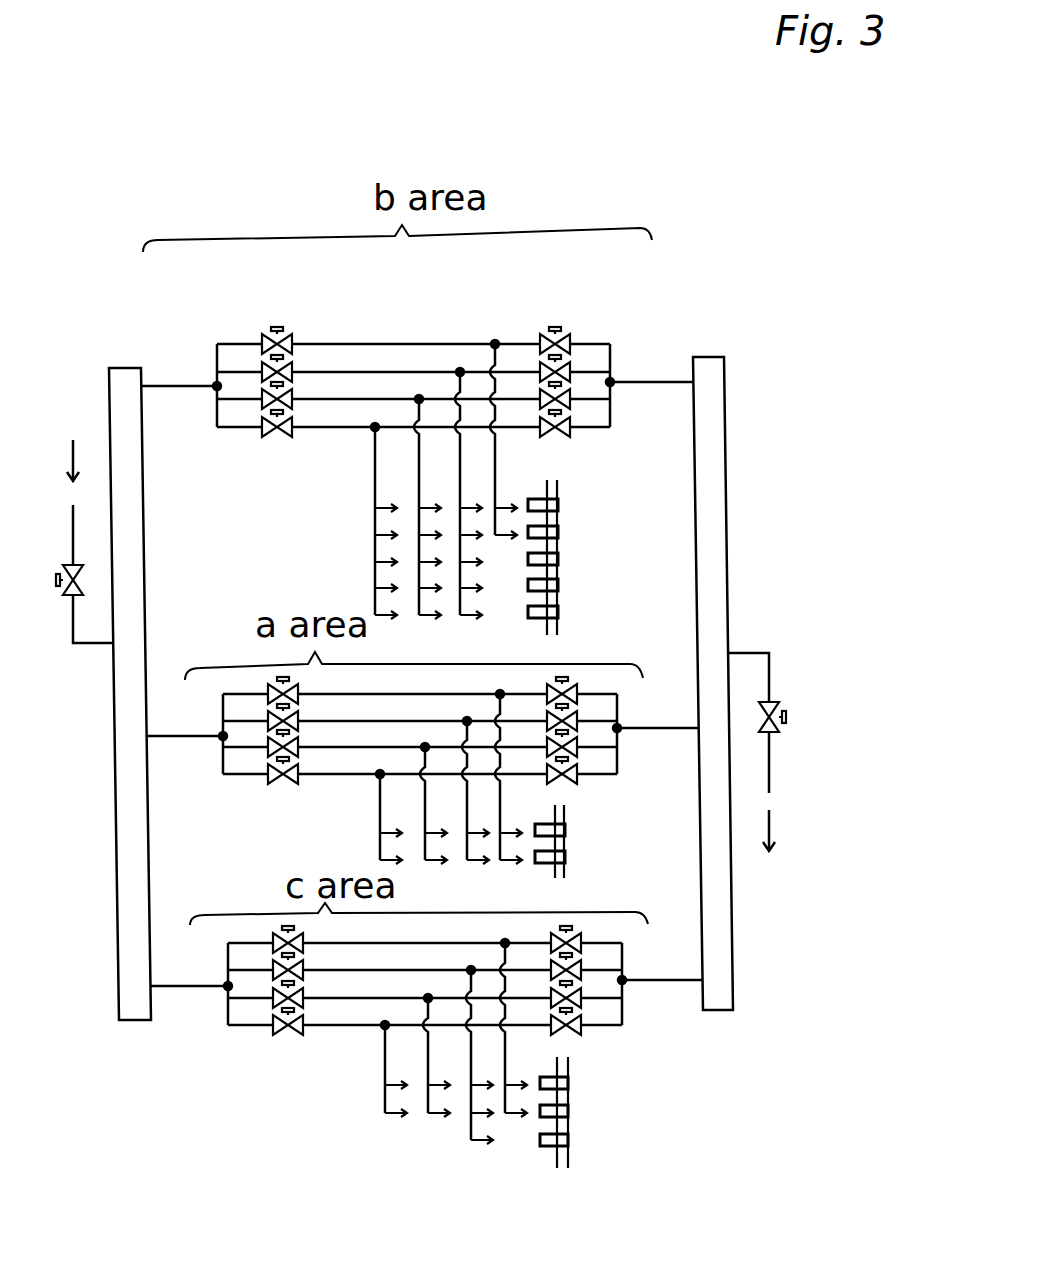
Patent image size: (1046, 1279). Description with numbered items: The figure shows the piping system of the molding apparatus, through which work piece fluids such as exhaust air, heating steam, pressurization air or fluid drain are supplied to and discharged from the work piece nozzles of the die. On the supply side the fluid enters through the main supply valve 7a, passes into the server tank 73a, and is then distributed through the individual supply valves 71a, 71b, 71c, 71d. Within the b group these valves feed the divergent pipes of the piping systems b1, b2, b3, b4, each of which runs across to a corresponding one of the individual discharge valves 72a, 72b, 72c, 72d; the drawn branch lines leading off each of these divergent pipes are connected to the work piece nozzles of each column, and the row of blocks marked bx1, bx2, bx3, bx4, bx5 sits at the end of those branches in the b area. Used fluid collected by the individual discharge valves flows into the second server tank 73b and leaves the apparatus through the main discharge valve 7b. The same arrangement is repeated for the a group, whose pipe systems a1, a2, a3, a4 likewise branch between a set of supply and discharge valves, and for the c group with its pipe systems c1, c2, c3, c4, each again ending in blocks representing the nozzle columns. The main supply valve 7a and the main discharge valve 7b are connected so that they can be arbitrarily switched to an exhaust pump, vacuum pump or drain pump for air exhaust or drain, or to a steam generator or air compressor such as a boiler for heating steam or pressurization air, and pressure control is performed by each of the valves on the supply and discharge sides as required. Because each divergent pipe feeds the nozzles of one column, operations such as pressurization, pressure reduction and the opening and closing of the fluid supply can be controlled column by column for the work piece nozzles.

The main supply valve 7a is at (66, 597).
The main discharge valve 7b is at (775, 705).
The server tank 73a is at (117, 770).
The server tank 73b is at (712, 557).
The individual supply valve 71a is at (262, 427).
The individual supply valve 71b is at (262, 399).
The individual supply valve 71c is at (262, 372).
The individual supply valve 71d is at (288, 342).
The individual discharge valve 72a is at (540, 426).
The individual discharge valve 72b is at (540, 399).
The individual discharge valve 72c is at (571, 369).
The individual discharge valve 72d is at (573, 328).
The piping system b1 is at (335, 344).
The piping system b2 is at (356, 372).
The piping system b3 is at (379, 399).
The piping system b4 is at (402, 427).
The unit block of b area bx1 is at (560, 484).
The unit block of b area bx2 is at (560, 514).
The unit block of b area bx3 is at (560, 555).
The unit block of b area bx4 is at (560, 584).
The unit block of b area bx5 is at (560, 612).
The branch pipe of a area a1 is at (315, 778).
The pipe system a2 is at (337, 697).
The pipe system a3 is at (362, 722).
The pipe system a4 is at (374, 750).
The branch pipe of c area c1 is at (340, 945).
The branch pipe of c area c2 is at (365, 972).
The branch pipe of c area c3 is at (383, 1000).
The branch pipe of c area c4 is at (400, 1028).